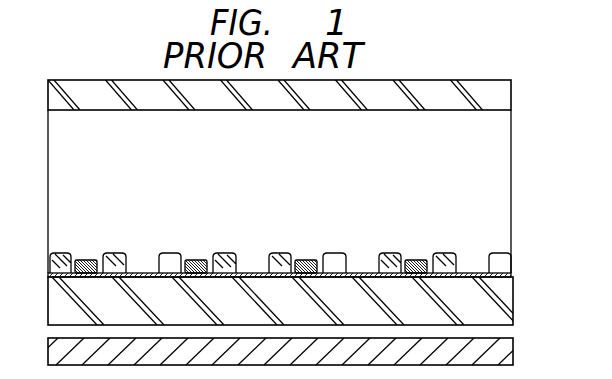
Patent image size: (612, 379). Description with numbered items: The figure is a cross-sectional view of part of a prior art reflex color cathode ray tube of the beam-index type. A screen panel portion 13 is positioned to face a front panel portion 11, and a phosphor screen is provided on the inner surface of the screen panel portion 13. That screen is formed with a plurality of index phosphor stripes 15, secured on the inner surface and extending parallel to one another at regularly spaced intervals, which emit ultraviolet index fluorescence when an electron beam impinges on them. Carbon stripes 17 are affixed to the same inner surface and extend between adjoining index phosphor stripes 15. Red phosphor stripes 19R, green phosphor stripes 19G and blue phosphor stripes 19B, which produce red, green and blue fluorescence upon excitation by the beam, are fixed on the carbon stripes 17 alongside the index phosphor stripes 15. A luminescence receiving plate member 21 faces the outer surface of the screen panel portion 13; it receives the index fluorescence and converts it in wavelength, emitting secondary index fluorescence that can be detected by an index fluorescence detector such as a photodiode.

The front panel portion 11 is at (512, 93).
The screen panel portion 13 is at (513, 300).
The index phosphor stripes 15 is at (416, 260).
The carbon stripes 17 is at (142, 273).
The red phosphor stripes 19R is at (170, 255).
The green phosphor stripes 19G is at (112, 253).
The blue phosphor stripes 19B is at (60, 253).
The luminescence receiving plate member 21 is at (513, 353).